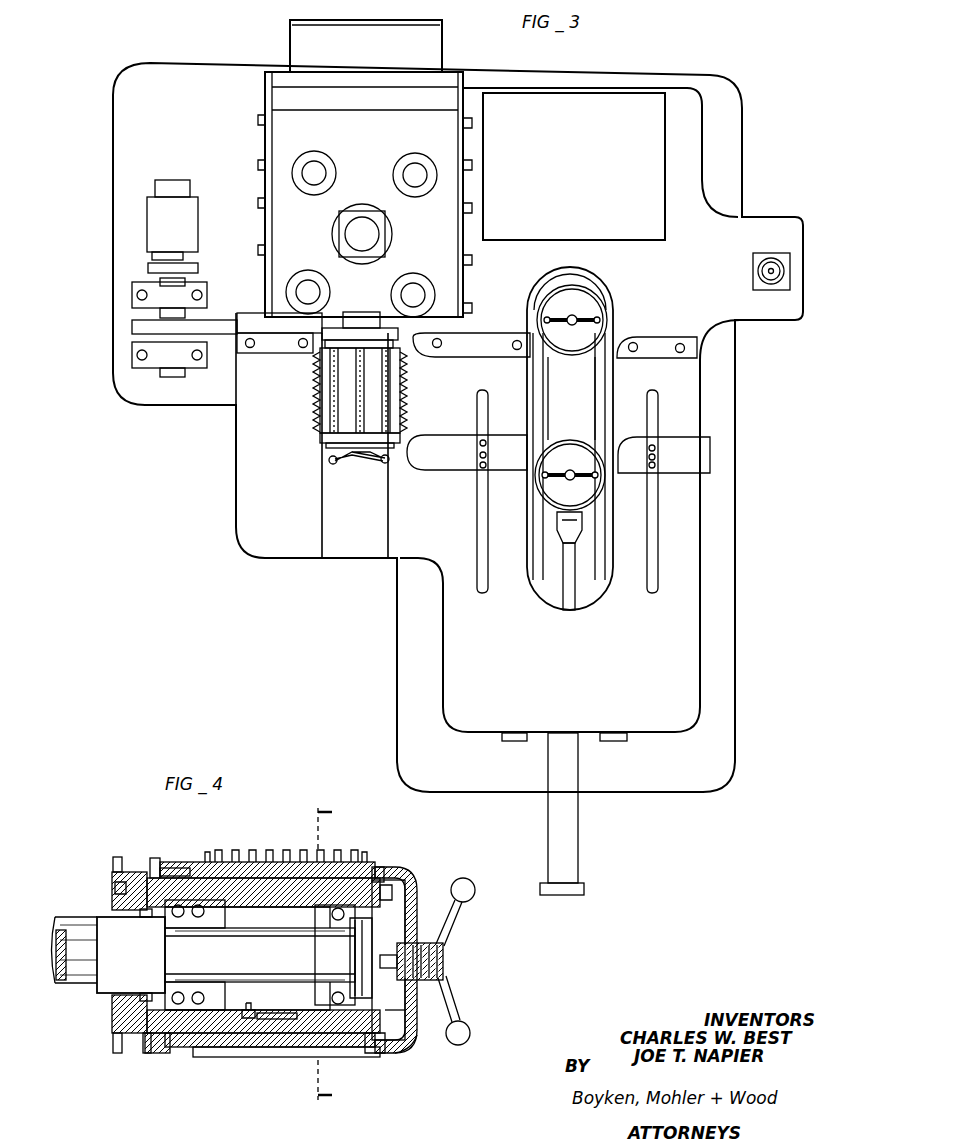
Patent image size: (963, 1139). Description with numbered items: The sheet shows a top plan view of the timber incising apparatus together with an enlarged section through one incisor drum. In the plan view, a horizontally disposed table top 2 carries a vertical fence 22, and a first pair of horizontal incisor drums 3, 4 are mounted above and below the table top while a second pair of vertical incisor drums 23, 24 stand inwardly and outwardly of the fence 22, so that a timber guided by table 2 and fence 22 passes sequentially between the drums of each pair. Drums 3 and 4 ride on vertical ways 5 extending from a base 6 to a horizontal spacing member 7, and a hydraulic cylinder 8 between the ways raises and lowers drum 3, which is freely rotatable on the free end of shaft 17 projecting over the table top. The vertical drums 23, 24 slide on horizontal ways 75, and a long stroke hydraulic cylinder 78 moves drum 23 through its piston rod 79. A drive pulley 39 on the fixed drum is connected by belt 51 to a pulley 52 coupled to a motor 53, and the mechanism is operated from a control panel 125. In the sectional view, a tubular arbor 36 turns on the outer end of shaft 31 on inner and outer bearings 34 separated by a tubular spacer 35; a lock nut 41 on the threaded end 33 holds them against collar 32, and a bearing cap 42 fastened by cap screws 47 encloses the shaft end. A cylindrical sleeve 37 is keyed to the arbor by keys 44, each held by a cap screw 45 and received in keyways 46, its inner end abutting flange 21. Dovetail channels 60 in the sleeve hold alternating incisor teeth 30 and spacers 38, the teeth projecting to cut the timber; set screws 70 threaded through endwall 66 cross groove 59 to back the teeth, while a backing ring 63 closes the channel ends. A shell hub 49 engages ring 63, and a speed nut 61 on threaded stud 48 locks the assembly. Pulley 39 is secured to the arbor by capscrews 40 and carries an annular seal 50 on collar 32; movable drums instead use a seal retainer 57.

In FIG. 3, the table top 2 is at (418, 520).
In FIG. 3, the incisor drum 3 is at (318, 392).
In FIG. 4, the incisor drum 4 is at (122, 1066).
In FIG. 3, the vertical ways 5 is at (413, 170).
In FIG. 3, the base 6 is at (410, 632).
In FIG. 3, the spacing member 7 is at (439, 226).
In FIG. 3, the hydraulic cylinder 8 is at (358, 234).
In FIG. 3, the shaft 17 is at (352, 312).
In FIG. 4, the flange 21 is at (148, 1050).
In FIG. 3, the fence 22 is at (292, 354).
In FIG. 3, the incisor drum 23 is at (555, 490).
In FIG. 3, the incisor drum 24 is at (598, 318).
In FIG. 4, the incisor teeth 30 is at (258, 850).
In FIG. 4, the shaft 31 is at (66, 922).
In FIG. 4, the collar 32 is at (135, 956).
In FIG. 4, the threaded outer end 33 is at (350, 940).
In FIG. 4, the bearings 34 is at (202, 920).
In FIG. 4, the tubular spacer 35 is at (298, 978).
In FIG. 4, the tubular arbor 36 is at (222, 890).
In FIG. 4, the cylindrical sleeve 37 is at (192, 870).
In FIG. 4, the spacers 38 is at (295, 850).
In FIG. 4, the drive pulley 39 is at (112, 1020).
In FIG. 4, the capscrews 40 is at (120, 884).
In FIG. 4, the lock nut 41 is at (380, 1045).
In FIG. 4, the bearing cap 42 is at (400, 1008).
In FIG. 4, the keys 44 is at (215, 1040).
In FIG. 4, the cap screw 45 is at (248, 1020).
In FIG. 4, the keyways 46 is at (302, 1047).
In FIG. 4, the cap screws 47 is at (405, 888).
In FIG. 4, the threaded stud 48 is at (445, 963).
In FIG. 4, the shell hub 49 is at (408, 1045).
In FIG. 4, the annular seal 50 is at (140, 912).
In FIG. 3, the belt 51 is at (218, 332).
In FIG. 3, the pulley 52 is at (135, 348).
In FIG. 3, the motor 53 is at (192, 206).
In FIG. 3, the seal retainer 57 is at (390, 326).
In FIG. 4, the circumferential groove 59 is at (186, 1055).
In FIG. 4, the channels 60 is at (270, 1057).
In FIG. 3, the speed nut 61 is at (347, 456).
In FIG. 4, the speed nut 61 is at (450, 922).
In FIG. 4, the backing ring 63 is at (372, 866).
In FIG. 4, the endwall 66 is at (156, 866).
In FIG. 4, the set screws 70 is at (185, 864).
In FIG. 3, the horizontal ways 75 is at (516, 743).
In FIG. 3, the long stroke hydraulic cylinder 78 is at (570, 840).
In FIG. 3, the piston rod 79 is at (565, 600).
In FIG. 3, the control panel 125 is at (302, 44).